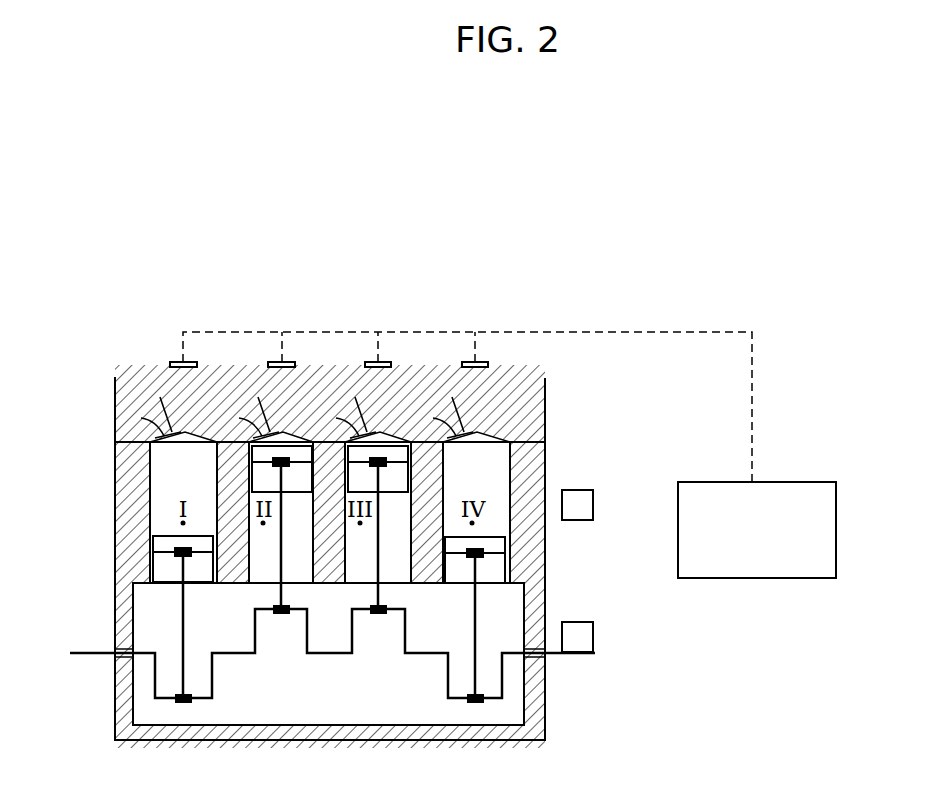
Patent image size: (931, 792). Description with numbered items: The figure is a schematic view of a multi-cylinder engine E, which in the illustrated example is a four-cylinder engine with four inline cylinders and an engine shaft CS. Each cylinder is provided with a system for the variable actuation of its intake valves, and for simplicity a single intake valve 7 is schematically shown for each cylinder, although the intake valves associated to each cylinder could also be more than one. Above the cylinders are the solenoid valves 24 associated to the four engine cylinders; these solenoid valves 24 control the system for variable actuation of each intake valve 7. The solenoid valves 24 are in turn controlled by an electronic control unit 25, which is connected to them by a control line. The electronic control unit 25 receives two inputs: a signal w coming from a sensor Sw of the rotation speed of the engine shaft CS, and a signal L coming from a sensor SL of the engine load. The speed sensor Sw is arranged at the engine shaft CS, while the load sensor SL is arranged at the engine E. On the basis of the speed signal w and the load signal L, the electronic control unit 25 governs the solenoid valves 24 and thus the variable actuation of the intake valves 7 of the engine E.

The intake valve 7 is at (160, 420).
The solenoid valve 24 is at (176, 366).
The electronic control unit 25 is at (783, 571).
The engine E is at (166, 234).
The engine shaft CS is at (88, 644).
The engine load sensor SL is at (577, 490).
The engine shaft rotation speed sensor Sw is at (592, 634).
The engine load signal L is at (676, 505).
The rotation speed signal w is at (577, 622).